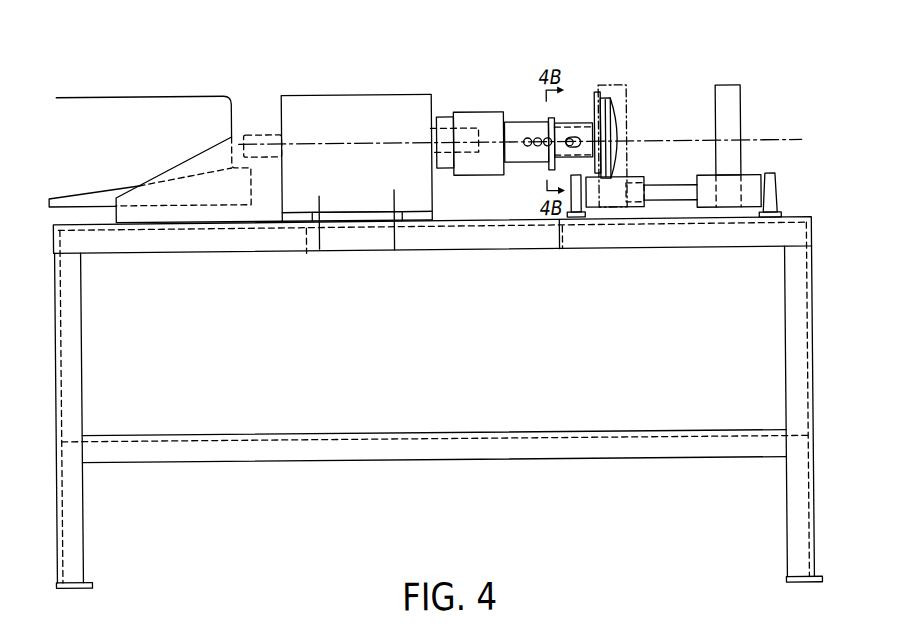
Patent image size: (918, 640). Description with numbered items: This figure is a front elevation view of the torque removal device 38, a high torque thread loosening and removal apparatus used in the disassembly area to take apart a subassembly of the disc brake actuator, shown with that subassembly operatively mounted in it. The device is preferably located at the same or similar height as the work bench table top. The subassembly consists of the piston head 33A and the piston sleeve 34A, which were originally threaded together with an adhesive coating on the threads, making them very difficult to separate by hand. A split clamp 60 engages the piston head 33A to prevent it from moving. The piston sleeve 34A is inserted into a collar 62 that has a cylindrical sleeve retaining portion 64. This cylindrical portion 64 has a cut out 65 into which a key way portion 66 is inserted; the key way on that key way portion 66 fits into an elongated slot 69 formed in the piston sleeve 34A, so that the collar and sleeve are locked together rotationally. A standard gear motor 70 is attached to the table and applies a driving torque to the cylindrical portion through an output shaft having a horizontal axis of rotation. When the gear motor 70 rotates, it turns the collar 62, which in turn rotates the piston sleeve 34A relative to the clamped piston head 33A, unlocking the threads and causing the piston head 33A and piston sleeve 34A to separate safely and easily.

The torque removal device 38 is at (808, 76).
The gear motor 70 is at (331, 106).
The collar 62 is at (484, 128).
The cylindrical sleeve retaining portion 64 is at (487, 122).
The cut out 65 is at (530, 127).
The key way portion 66 is at (522, 153).
The piston sleeve 34A is at (570, 136).
The elongated slot 69 is at (578, 139).
The piston head 33A is at (622, 111).
The split clamp 60 is at (623, 86).